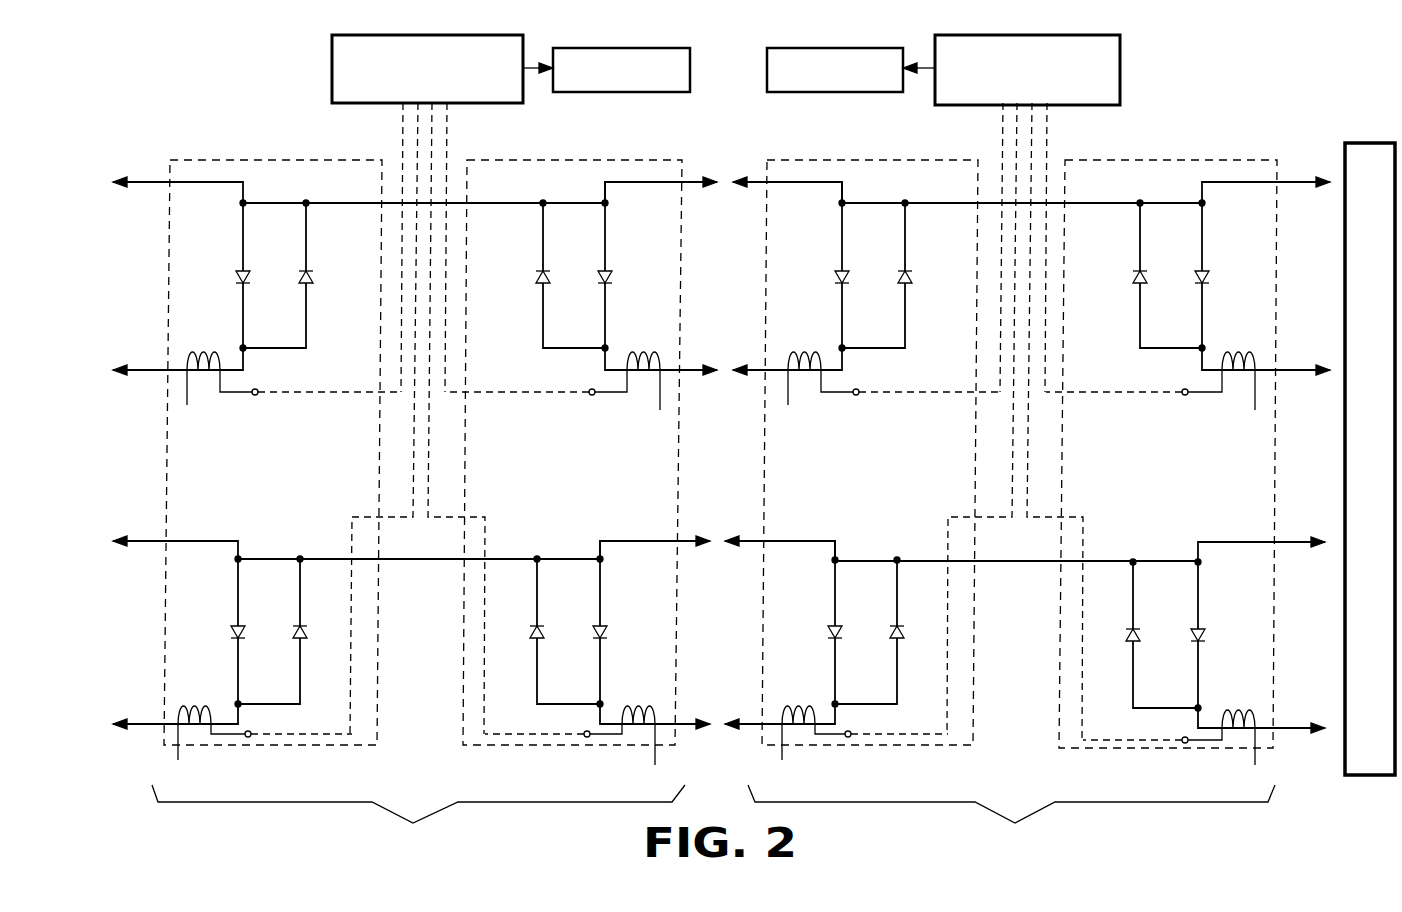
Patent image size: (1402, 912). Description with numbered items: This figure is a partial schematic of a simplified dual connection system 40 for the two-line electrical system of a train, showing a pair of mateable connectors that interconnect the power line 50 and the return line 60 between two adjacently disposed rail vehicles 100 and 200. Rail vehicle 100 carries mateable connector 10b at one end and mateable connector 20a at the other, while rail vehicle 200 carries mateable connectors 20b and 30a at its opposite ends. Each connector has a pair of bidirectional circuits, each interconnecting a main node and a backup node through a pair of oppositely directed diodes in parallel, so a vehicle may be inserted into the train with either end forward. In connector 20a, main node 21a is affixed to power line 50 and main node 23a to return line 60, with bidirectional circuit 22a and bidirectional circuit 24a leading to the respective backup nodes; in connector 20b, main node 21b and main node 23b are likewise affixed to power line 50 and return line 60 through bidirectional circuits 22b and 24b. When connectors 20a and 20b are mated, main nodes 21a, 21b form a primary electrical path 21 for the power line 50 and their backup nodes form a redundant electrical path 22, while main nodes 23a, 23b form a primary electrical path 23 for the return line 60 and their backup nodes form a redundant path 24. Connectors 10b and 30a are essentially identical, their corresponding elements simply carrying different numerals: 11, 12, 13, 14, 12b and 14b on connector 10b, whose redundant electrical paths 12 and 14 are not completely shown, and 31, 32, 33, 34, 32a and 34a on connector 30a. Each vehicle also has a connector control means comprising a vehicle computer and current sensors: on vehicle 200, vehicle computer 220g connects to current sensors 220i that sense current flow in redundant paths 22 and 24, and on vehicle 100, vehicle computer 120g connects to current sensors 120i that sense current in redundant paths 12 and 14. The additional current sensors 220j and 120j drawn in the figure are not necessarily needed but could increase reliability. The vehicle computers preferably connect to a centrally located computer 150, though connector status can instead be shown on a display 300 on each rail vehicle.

The simplified dual connection system 40 is at (230, 142).
The vehicle computer 220g is at (332, 68).
The vehicle computer 120g is at (1120, 68).
The display 300 is at (690, 72).
The centrally located computer 150 is at (1352, 626).
The mateable connector 30a is at (205, 160).
The mateable connector 20b is at (640, 162).
The mateable connector 20a is at (808, 162).
The mateable connector 10b is at (1235, 160).
The return line 60 is at (418, 562).
The power line 50 is at (345, 203).
The rail vehicle 200 is at (418, 822).
The rail vehicle 100 is at (1011, 822).
The output line 31 is at (117, 186).
The output line 32 is at (117, 374).
The output line 33 is at (117, 545).
The output line 34 is at (117, 728).
The output line 11 is at (1326, 186).
The redundant electrical path 12 is at (1326, 374).
The output line 13 is at (1322, 547).
The redundant electrical path 14 is at (1322, 732).
The primary electrical path 21 is at (725, 188).
The redundant electrical path 22 is at (725, 376).
The primary electrical path 23 is at (718, 546).
The redundant electrical path 24 is at (718, 729).
The main node 21b is at (605, 203).
The main node 21a is at (842, 203).
The main node 23b is at (598, 558).
The main node 23a is at (838, 558).
The diode circuit 32a is at (297, 355).
The bidirectional circuit 22b is at (568, 356).
The bidirectional circuit 22a is at (872, 358).
The diode circuit 12b is at (1172, 358).
The diode circuit 34a is at (278, 548).
The bidirectional circuit 24b is at (545, 548).
The bidirectional circuit 24a is at (892, 548).
The diode circuit 14b is at (1152, 550).
The relay switch 220j is at (200, 398).
The current sensors 220i is at (652, 402).
The relay switch 120j is at (800, 398).
The current sensors 120i is at (1245, 402).